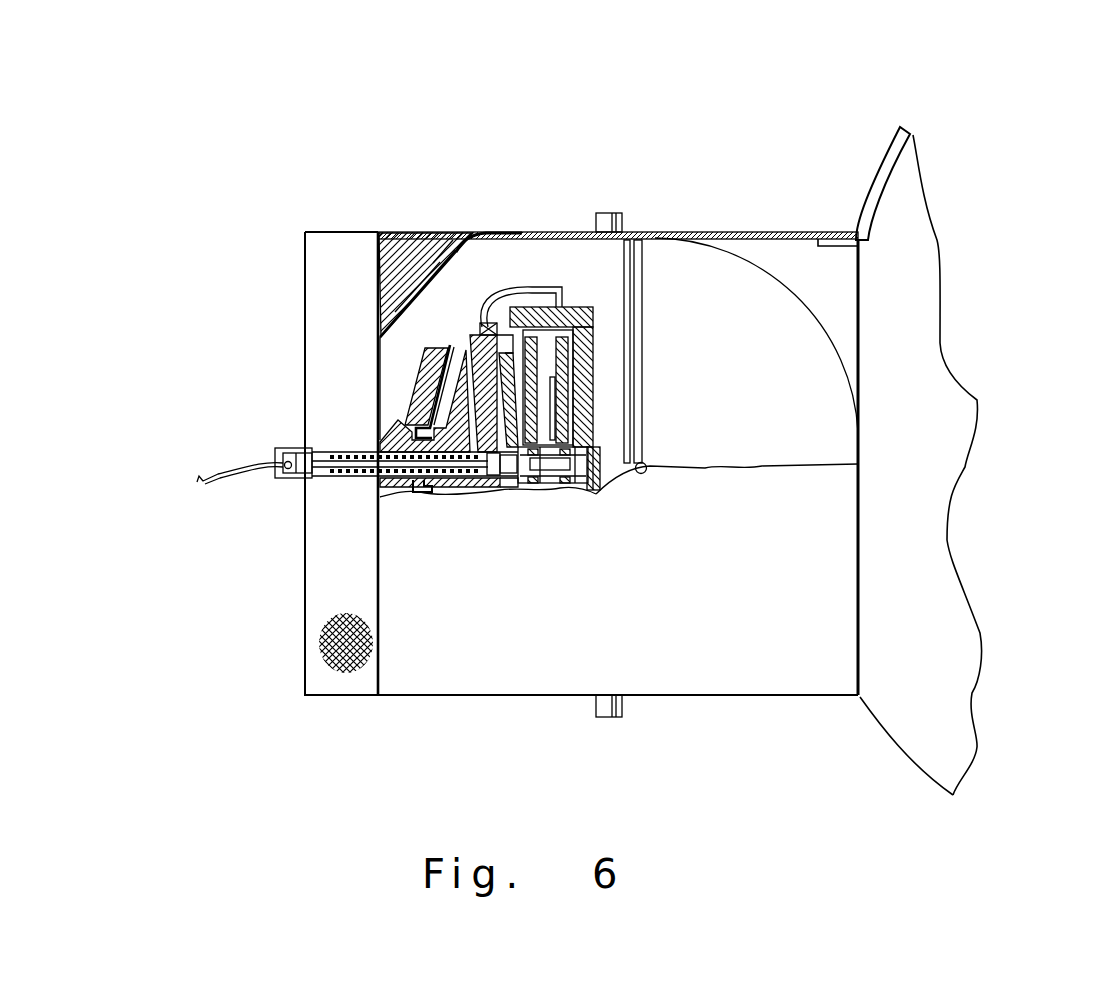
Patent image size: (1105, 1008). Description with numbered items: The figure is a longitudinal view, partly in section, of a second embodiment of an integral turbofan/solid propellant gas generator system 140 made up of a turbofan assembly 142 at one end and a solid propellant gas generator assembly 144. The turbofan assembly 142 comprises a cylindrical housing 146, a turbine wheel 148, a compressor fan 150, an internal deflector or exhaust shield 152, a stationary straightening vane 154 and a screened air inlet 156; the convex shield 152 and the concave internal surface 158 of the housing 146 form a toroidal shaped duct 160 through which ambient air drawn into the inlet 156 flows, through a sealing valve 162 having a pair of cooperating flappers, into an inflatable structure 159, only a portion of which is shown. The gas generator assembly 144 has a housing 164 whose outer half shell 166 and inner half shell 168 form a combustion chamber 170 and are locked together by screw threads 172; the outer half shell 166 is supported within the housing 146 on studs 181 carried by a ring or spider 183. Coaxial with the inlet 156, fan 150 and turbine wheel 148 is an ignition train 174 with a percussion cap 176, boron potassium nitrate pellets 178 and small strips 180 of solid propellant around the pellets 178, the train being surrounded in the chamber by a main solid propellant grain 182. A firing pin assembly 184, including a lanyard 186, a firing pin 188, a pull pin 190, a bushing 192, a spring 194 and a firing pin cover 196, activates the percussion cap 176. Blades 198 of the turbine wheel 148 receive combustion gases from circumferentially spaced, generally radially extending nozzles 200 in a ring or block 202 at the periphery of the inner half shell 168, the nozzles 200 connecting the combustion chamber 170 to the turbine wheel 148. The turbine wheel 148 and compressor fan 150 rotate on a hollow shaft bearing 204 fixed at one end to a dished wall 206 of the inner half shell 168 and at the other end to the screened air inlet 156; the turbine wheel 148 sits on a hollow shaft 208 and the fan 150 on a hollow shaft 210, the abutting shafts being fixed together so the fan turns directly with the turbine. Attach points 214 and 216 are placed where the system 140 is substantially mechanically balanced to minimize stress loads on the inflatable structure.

The integral turbofan/solid propellant gas generator system 140 is at (675, 131).
The turbofan assembly 142 is at (346, 167).
The solid propellant gas generator assembly 144 is at (568, 252).
The cylindrical housing 146 is at (793, 232).
The turbine wheel 148 is at (480, 420).
The compressor fan 150 is at (410, 350).
The internal deflector or exhaust shield 152 is at (522, 320).
The stationary or static straightening vane 154 is at (385, 258).
The screened air inlet 156 is at (335, 603).
The concave internal surface 158 is at (447, 258).
The inflatable structure 159 is at (880, 192).
The toroidal shaped duct 160 is at (508, 262).
The sealing valve 162 is at (652, 360).
The housing 164 is at (600, 277).
The outer half shell 166 is at (613, 347).
The inner half shell 168 is at (485, 265).
The combustion chamber 170 is at (597, 333).
The screw threads 172 is at (543, 318).
The ignition train 174 is at (600, 502).
The percussion cap 176 is at (517, 486).
The boron potassium nitrate pellets 178 is at (567, 490).
The small strips of solid propellant 180 is at (542, 484).
The studs 181 is at (643, 332).
The main solid propellant grain 182 is at (646, 473).
The ring or spider 183 is at (636, 370).
The firing pin assembly 184 is at (362, 482).
The lanyard 186 is at (207, 470).
The firing pin 188 is at (300, 480).
The pull pin 190 is at (277, 469).
The bushing 192 is at (300, 458).
The spring 194 is at (360, 455).
The firing pin cover 196 is at (273, 450).
The blades 198 is at (478, 322).
The nozzles 200 is at (505, 343).
The ring or block 202 is at (512, 351).
The hollow shaft bearing 204 is at (458, 477).
The dished wall 206 is at (488, 380).
The hollow shaft 208 is at (422, 480).
The hollow shaft 210 is at (415, 480).
The attach point 214 is at (615, 213).
The attach point 216 is at (622, 712).